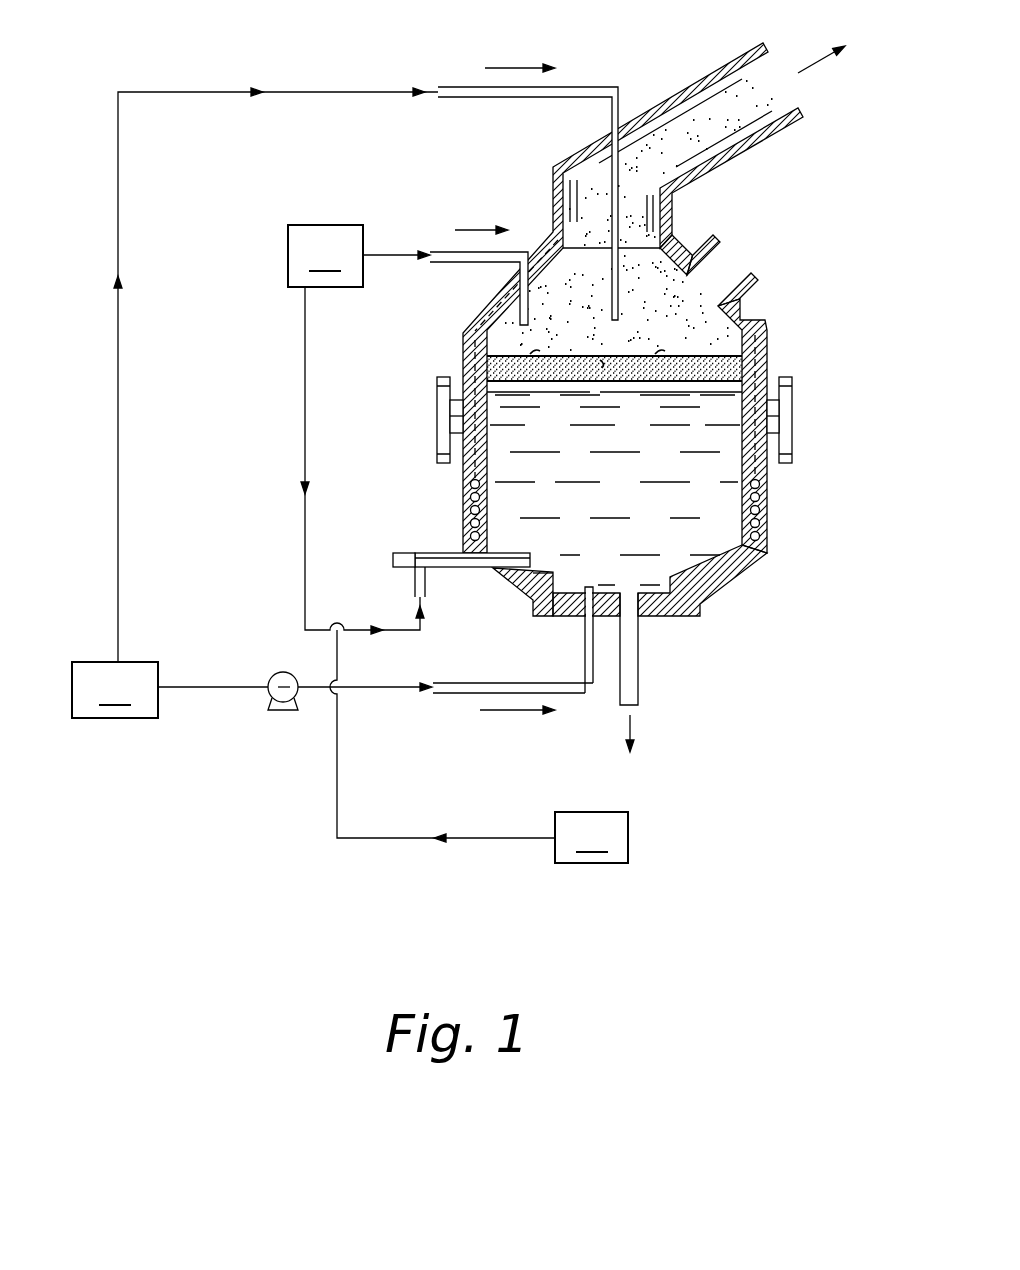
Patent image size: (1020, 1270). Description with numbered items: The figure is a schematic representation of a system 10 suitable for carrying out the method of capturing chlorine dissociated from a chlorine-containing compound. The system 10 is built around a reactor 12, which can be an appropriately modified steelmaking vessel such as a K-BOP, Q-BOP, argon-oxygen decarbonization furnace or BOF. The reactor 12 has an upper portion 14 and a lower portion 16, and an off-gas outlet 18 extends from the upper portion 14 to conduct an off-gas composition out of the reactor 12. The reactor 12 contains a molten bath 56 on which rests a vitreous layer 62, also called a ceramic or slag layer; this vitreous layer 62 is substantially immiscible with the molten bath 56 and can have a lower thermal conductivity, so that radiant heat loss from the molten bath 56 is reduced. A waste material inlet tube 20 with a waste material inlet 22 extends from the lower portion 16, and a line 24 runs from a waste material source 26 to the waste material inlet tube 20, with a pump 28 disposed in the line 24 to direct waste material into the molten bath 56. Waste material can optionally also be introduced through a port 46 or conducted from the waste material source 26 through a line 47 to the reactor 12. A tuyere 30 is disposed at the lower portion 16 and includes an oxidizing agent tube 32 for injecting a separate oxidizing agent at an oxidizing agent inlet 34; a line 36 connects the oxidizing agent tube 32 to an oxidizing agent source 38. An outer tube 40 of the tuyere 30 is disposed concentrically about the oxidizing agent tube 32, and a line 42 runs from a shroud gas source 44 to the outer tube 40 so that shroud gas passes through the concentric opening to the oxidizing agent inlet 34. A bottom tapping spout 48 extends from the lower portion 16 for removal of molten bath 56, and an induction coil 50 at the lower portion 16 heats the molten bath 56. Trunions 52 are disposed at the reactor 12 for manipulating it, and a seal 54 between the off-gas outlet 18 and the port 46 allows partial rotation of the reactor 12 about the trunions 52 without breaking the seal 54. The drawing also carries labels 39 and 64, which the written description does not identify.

The system 10 is at (805, 716).
The reactor 12 is at (780, 325).
The upper portion 14 is at (462, 336).
The lower portion 16 is at (698, 608).
The off-gas outlet 18 is at (723, 63).
The waste material inlet tube 20 is at (490, 683).
The waste material inlet 22 is at (588, 585).
The line 24 is at (226, 690).
The waste material source 26 is at (115, 690).
The pump 28 is at (278, 672).
The tuyere 30 is at (415, 537).
The oxidizing agent tube 32 is at (457, 553).
The oxidizing agent inlet 34 is at (540, 557).
The line 36 is at (301, 430).
The oxidizing agent source 38 is at (359, 256).
The gas inlet pipe 39 is at (443, 250).
The outer tube 40 is at (468, 572).
The line 42 is at (332, 770).
The shroud gas source 44 is at (591, 837).
The port 46 is at (758, 292).
The line 47 is at (114, 354).
The bottom tapping spout 48 is at (640, 665).
The induction coil 50 is at (763, 508).
The trunions 52 is at (437, 416).
The seal 54 is at (678, 245).
The molten bath 56 is at (703, 552).
The vitreous layer 62 is at (465, 360).
The liner 64 is at (560, 310).